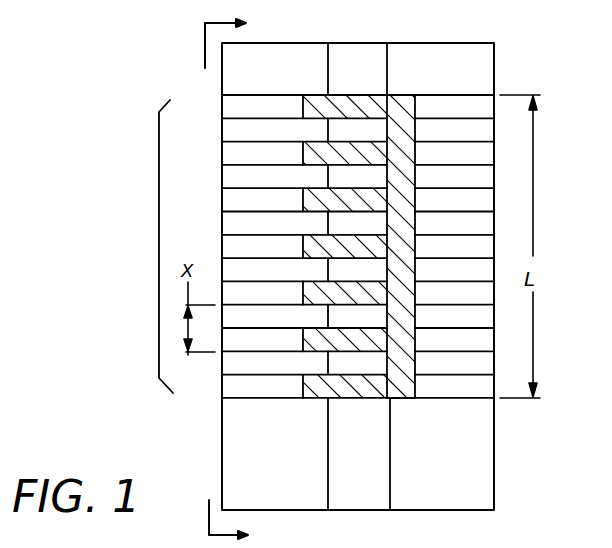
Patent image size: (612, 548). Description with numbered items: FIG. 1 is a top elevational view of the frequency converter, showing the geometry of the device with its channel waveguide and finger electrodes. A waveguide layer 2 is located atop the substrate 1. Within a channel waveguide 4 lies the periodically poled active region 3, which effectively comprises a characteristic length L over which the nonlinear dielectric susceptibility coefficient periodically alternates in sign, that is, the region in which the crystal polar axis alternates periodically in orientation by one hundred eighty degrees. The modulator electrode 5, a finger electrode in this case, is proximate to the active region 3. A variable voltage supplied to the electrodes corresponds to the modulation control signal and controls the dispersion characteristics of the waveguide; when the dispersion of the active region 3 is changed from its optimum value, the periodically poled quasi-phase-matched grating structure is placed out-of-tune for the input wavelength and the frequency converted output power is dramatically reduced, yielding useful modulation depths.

The substrate 1 is at (222, 437).
The waveguide layer 2 is at (510, 473).
The periodically poled active region 3 is at (159, 235).
The channel waveguide 4 is at (377, 57).
The modulator electrode 5 is at (405, 108).